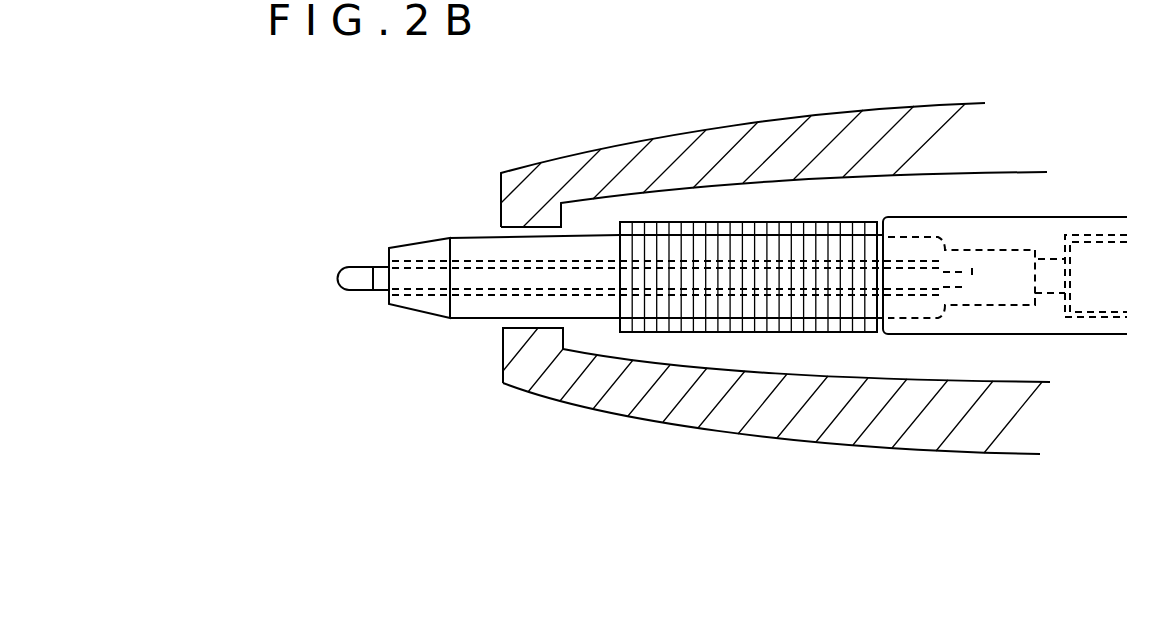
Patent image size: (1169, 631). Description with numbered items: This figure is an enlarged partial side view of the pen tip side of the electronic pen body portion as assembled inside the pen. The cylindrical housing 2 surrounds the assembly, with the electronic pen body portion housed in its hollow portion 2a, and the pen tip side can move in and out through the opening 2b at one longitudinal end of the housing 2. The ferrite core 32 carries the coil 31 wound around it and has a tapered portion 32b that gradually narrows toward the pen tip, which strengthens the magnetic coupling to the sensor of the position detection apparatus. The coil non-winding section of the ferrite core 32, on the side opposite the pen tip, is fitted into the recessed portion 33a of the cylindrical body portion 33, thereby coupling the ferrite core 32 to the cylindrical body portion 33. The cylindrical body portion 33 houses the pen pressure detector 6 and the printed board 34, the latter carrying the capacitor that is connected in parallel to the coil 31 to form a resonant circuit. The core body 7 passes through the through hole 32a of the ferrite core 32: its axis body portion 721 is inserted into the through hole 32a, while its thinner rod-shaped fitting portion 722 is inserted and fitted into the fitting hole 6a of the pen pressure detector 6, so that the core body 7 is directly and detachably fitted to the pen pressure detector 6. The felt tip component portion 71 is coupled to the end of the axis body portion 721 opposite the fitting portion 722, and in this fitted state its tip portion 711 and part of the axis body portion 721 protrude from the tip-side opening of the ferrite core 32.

The housing 2 is at (767, 143).
The hollow portion 2a is at (697, 207).
The opening 2b is at (500, 227).
The pen pressure detector 6 is at (1073, 375).
The fitting hole 6a is at (960, 288).
The electronic pen core body 7 is at (708, 169).
The coil 31 is at (747, 333).
The ferrite core 32 is at (632, 237).
The through hole 32a is at (477, 295).
The tapered portion 32b is at (417, 312).
The cylindrical body portion 33 is at (912, 217).
The recessed portion 33a is at (913, 318).
The printed board 34 is at (1095, 295).
The tip component portion 71 is at (336, 235).
The tip portion 711 is at (335, 278).
The axis body portion 721 is at (380, 275).
The fitting portion 722 is at (965, 275).